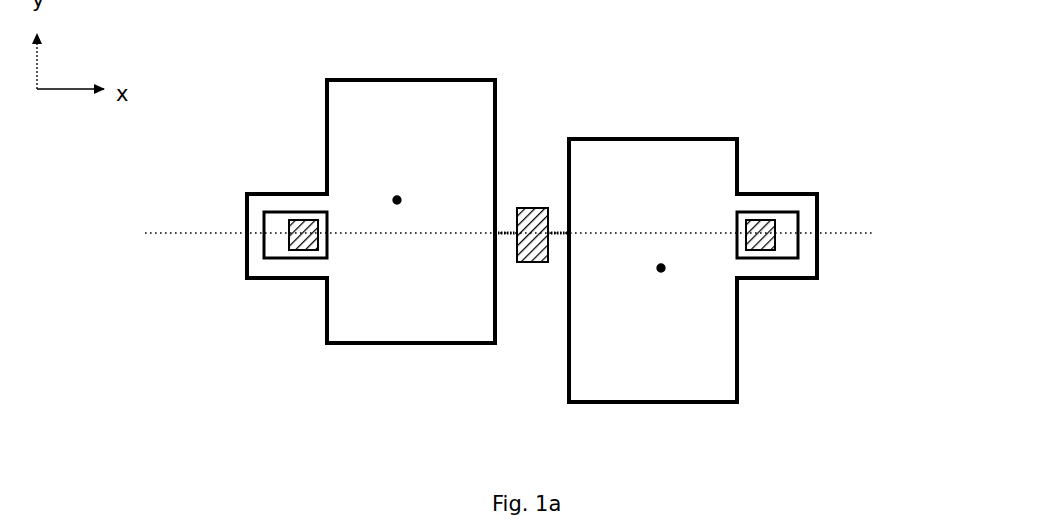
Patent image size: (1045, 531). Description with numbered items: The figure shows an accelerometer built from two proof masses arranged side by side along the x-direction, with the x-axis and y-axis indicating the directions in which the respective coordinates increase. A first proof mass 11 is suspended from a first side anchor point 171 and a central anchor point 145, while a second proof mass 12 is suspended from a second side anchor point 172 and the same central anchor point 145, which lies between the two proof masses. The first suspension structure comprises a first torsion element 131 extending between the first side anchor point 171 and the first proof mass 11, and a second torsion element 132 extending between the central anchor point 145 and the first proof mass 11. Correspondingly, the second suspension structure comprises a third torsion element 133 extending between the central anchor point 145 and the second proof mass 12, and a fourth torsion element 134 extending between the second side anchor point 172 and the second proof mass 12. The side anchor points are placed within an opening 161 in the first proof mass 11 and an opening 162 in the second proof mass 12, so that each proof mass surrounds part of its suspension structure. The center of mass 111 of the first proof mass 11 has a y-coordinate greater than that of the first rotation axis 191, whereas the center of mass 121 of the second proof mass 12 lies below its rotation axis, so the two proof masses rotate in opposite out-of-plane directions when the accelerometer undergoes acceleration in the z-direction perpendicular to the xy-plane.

The first proof mass 11 is at (260, 267).
The second proof mass 12 is at (659, 155).
The center of mass of the first proof mass 111 is at (391, 194).
The center of mass of the second proof mass 121 is at (654, 282).
The first torsion element 131 is at (276, 243).
The second torsion element 132 is at (503, 243).
The third torsion element 133 is at (557, 241).
The fourth torsion element 134 is at (787, 221).
The central anchor point 145 is at (535, 205).
The opening in the first proof mass 161 is at (317, 219).
The opening in the second proof mass 162 is at (746, 221).
The first side anchor point 171 is at (289, 223).
The second side anchor point 172 is at (768, 252).
The first rotation axis 191 is at (454, 239).